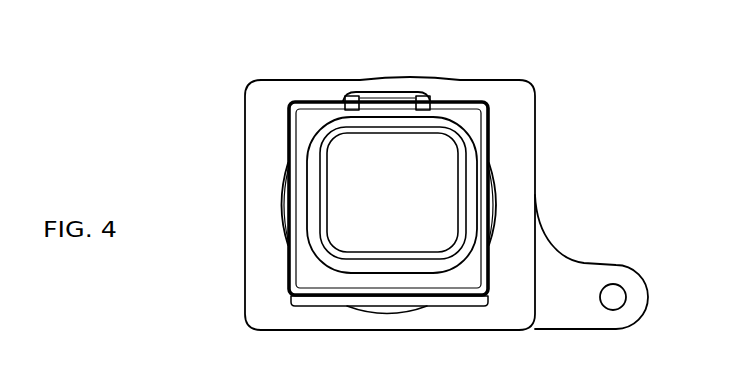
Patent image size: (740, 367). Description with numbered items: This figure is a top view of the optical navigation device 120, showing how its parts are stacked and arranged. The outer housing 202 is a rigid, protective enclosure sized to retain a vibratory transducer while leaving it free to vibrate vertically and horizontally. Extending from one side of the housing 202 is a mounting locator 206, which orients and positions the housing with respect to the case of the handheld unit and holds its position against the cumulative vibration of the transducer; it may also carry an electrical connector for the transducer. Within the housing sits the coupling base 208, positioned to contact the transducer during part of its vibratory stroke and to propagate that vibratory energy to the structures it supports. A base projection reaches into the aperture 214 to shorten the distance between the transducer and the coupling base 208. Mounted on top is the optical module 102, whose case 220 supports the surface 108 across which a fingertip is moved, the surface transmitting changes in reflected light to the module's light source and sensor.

The optical module 102 is at (425, 157).
The surface 108 is at (408, 204).
The optical navigation device 120 is at (552, 125).
The housing 202 is at (260, 104).
The mounting locator 206 is at (573, 270).
The coupling base 208 is at (307, 277).
The aperture 214 is at (278, 210).
The case 220 is at (390, 77).